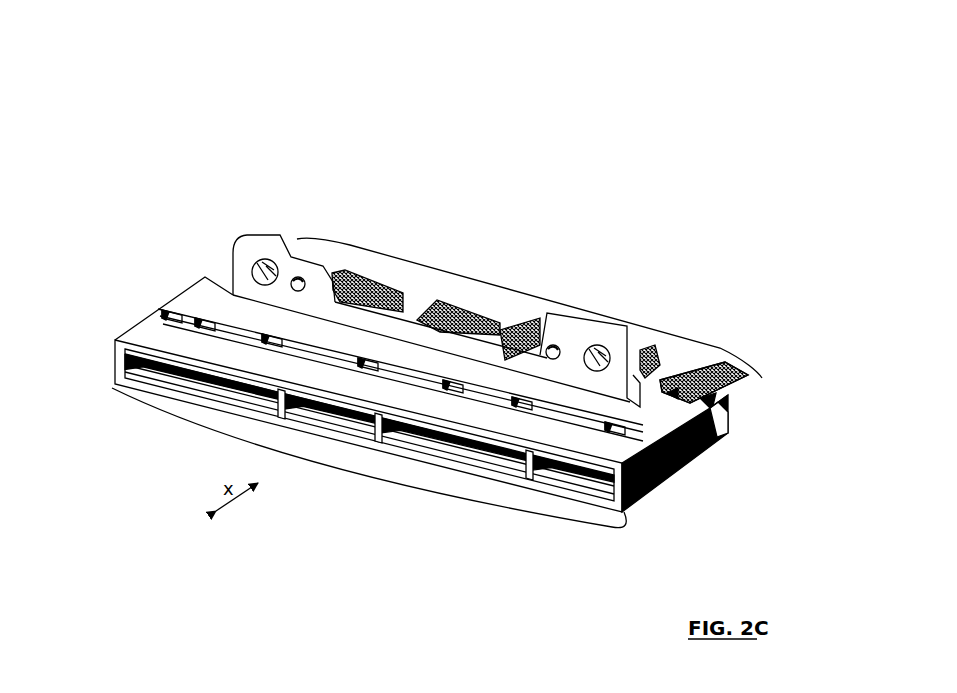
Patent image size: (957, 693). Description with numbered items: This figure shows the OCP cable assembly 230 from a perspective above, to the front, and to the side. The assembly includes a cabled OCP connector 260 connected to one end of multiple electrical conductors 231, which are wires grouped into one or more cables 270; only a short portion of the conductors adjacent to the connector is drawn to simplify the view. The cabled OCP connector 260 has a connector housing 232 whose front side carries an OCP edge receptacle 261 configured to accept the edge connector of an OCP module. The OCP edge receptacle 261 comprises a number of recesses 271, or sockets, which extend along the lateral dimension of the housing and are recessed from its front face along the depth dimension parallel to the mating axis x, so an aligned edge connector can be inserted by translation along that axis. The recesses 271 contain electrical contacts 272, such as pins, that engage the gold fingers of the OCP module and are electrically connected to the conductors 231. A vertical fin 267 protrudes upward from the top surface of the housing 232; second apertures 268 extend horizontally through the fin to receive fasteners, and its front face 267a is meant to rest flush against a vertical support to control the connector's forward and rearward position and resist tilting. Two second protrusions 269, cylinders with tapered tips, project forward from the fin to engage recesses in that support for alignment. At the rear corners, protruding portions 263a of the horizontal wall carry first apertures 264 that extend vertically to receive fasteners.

The OCP cable assembly 230 is at (756, 58).
The cabled OCP connector 260 is at (445, 371).
The OCP edge receptacle 261 is at (363, 470).
The connector housing 232 is at (142, 325).
The recesses 271 is at (470, 447).
The electrical contacts 272 is at (570, 463).
The vertical fin 267 is at (402, 330).
The front face 267a is at (452, 340).
The second apertures 268 is at (255, 262).
The second protrusions 269 is at (298, 276).
The cables 270 is at (537, 295).
The electrical conductors 231 is at (727, 372).
The first apertures 264 is at (720, 407).
The protruding portions of horizontal wall 263a is at (733, 412).